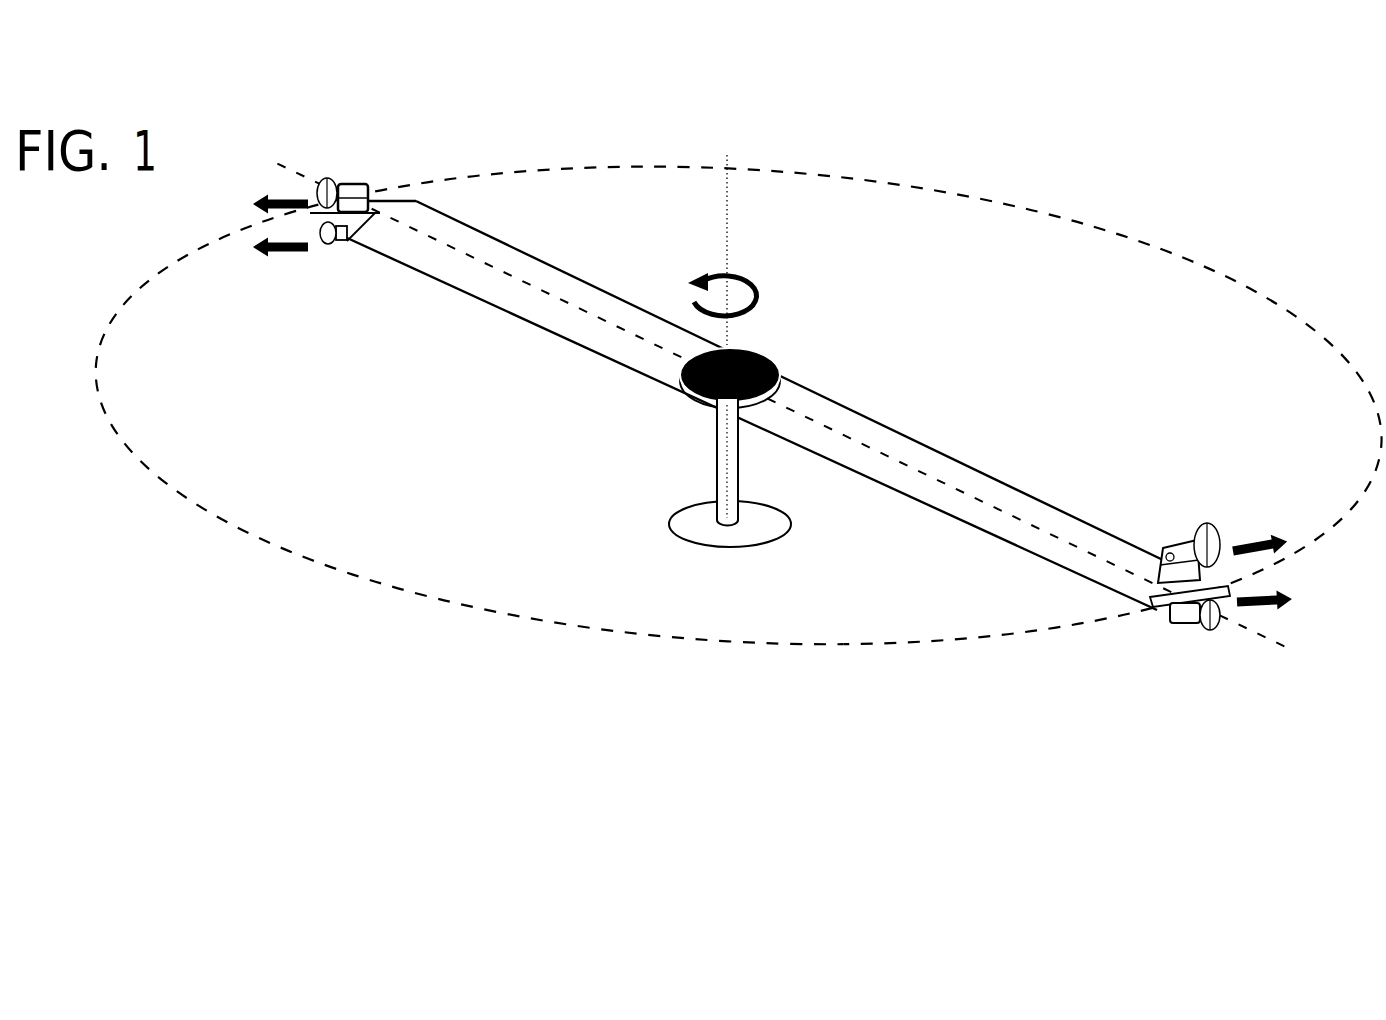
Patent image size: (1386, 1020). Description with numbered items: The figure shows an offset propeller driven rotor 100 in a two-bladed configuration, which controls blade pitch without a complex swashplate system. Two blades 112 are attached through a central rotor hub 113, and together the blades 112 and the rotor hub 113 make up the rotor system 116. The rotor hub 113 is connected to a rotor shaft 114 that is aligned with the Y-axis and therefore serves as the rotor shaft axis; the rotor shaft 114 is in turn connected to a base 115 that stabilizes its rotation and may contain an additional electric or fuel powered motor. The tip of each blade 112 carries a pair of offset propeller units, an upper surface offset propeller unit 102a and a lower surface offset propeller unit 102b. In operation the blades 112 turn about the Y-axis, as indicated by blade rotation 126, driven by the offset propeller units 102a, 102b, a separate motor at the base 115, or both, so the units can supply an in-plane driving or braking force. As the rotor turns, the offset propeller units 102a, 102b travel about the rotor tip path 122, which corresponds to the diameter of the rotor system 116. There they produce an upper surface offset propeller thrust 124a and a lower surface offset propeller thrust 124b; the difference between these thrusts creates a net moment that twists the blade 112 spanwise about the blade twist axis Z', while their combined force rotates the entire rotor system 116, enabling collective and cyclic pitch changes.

The offset propeller driven rotor 100 is at (1170, 140).
The upper surface offset propeller unit 102a is at (1187, 543).
The lower surface offset propeller unit 102b is at (1190, 625).
The blade 112 is at (572, 286).
The central rotor hub 113 is at (683, 395).
The rotor shaft 114 is at (715, 470).
The base 115 is at (683, 547).
The rotor system 116 is at (915, 413).
The rotor tip path 122 is at (1122, 233).
The upper surface offset propeller thrust 124a is at (1255, 540).
The lower surface offset propeller thrust 124b is at (1290, 603).
The blade rotation 126 is at (757, 300).